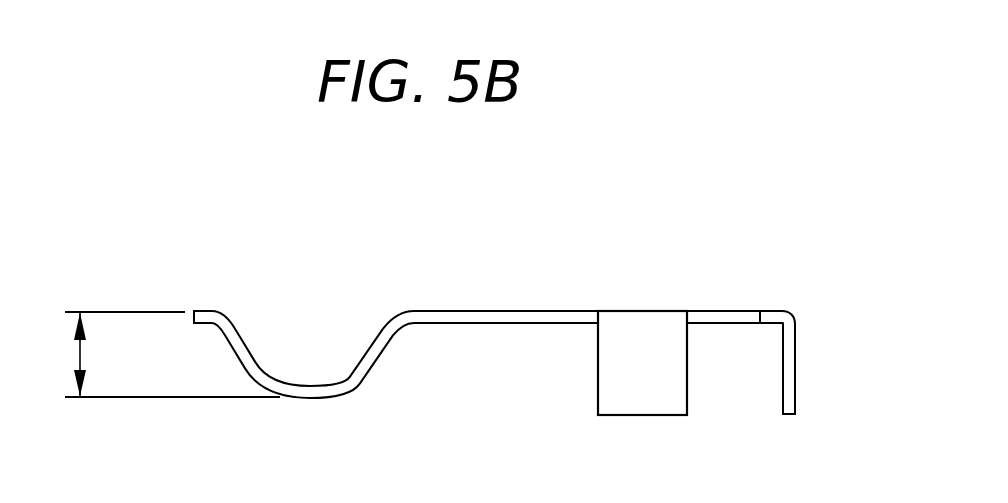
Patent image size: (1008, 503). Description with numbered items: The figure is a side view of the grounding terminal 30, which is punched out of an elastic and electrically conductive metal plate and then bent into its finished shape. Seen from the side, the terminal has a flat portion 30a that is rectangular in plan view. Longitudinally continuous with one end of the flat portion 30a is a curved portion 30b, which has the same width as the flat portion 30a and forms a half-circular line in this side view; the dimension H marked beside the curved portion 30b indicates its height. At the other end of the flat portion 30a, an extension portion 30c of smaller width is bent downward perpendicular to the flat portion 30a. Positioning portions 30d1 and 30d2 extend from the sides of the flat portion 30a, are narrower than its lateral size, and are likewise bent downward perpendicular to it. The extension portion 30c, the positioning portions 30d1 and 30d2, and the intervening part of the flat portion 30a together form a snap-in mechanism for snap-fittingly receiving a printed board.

The grounding terminal 30 is at (826, 273).
The flat portion 30a is at (460, 311).
The curved portion 30b is at (313, 386).
The extension portion 30c is at (797, 352).
The positioning portion 30d1 is at (640, 328).
The positioning portion 30d2 is at (652, 228).
The height of curved portion H is at (163, 354).